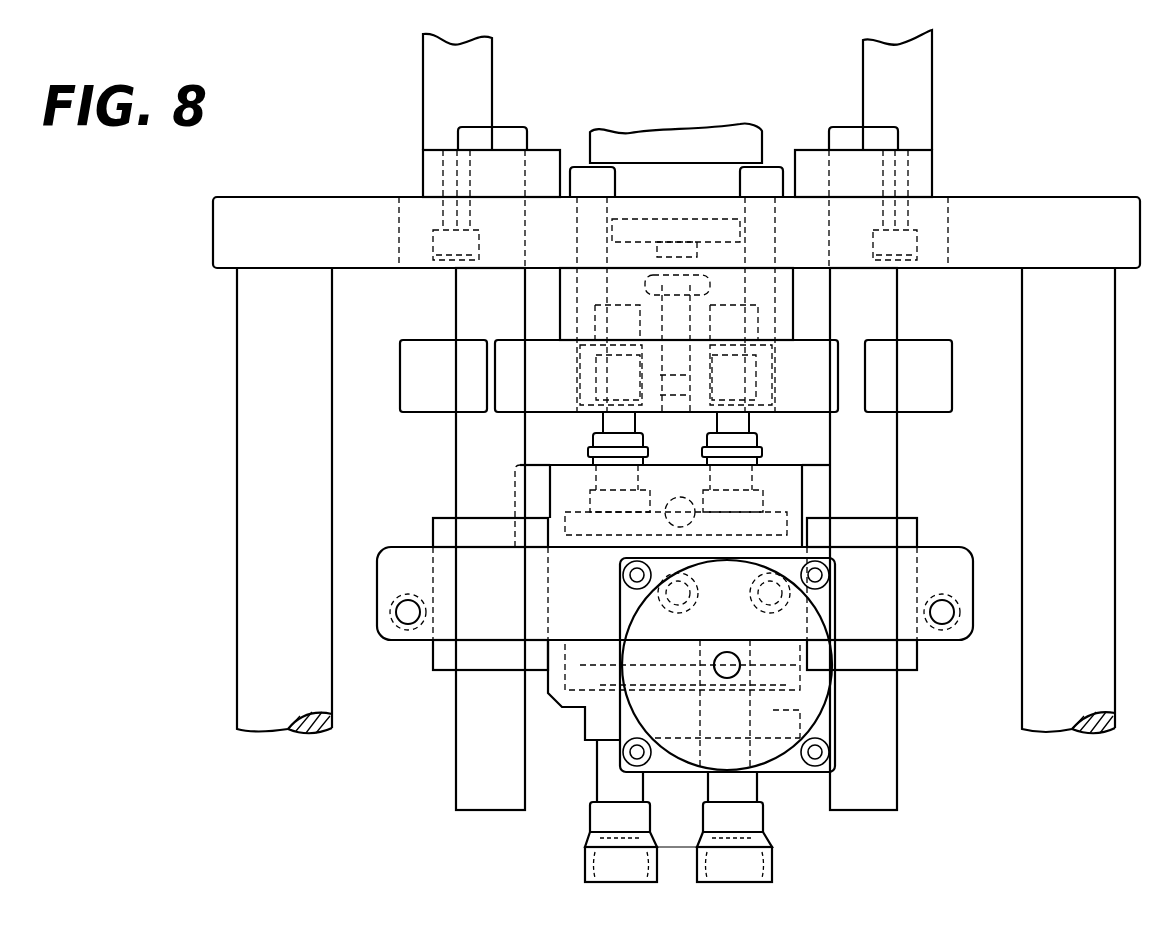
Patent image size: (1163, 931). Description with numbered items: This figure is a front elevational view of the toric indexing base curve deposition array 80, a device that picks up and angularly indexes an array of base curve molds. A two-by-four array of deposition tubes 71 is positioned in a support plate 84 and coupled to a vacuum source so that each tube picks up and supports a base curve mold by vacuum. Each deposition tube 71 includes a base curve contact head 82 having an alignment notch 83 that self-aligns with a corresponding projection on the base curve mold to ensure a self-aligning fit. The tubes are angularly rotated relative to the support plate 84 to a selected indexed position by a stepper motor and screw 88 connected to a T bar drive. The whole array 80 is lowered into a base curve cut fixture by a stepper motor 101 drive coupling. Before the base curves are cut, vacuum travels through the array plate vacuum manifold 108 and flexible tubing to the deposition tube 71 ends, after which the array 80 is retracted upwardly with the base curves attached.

The stepper motor 101 is at (652, 128).
The toric indexing base curve deposition array 80 is at (416, 470).
The array plate vacuum manifold 108 is at (396, 608).
The support plate 84 is at (393, 642).
The stepper motor and screw 88 is at (835, 722).
The deposition tube 71 is at (593, 780).
The base curve contact head 82 is at (692, 857).
The alignment notch 83 is at (583, 882).